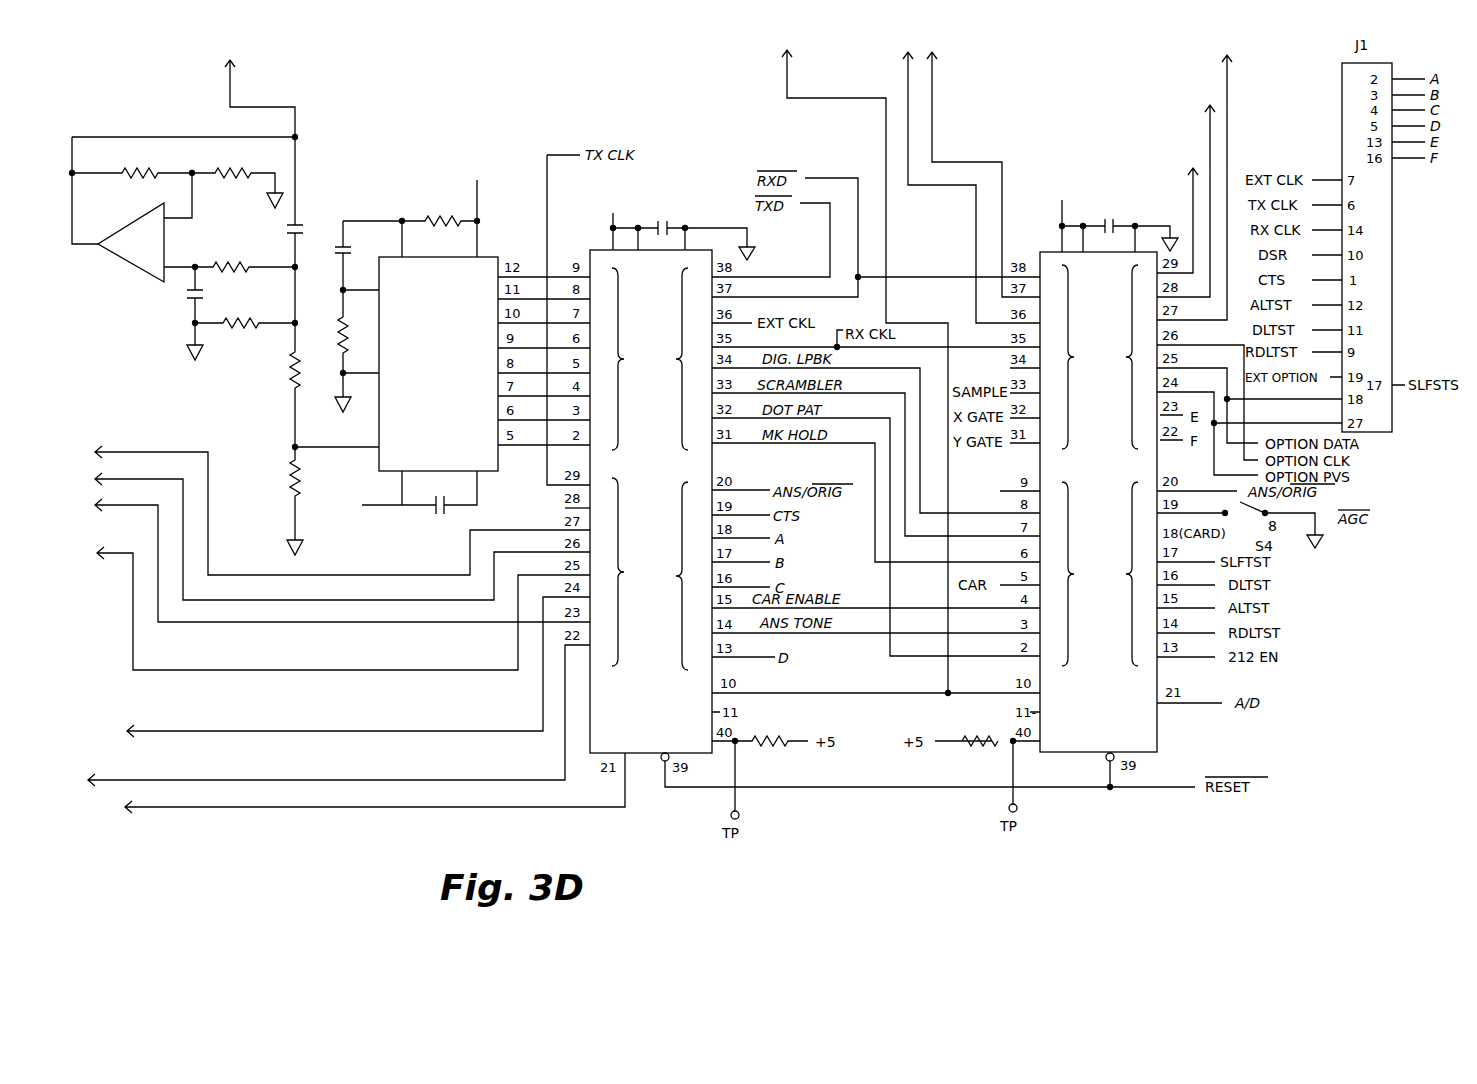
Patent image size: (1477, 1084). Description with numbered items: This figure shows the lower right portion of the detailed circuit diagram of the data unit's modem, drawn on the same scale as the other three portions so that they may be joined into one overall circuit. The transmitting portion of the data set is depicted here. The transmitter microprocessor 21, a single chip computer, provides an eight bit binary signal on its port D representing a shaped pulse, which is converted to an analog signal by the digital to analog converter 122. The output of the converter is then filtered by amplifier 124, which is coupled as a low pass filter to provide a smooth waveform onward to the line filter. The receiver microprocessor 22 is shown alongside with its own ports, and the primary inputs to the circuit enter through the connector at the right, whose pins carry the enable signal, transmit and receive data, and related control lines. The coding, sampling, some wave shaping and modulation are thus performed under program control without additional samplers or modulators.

The digital to analog converter 122 is at (380, 458).
The amplifier 124 is at (122, 260).
The transmitter microprocessor Z21 (6500/A XMTR) 21 is at (672, 472).
The receiver microprocessor Z22 (6500/A RCVR) 22 is at (1109, 465).